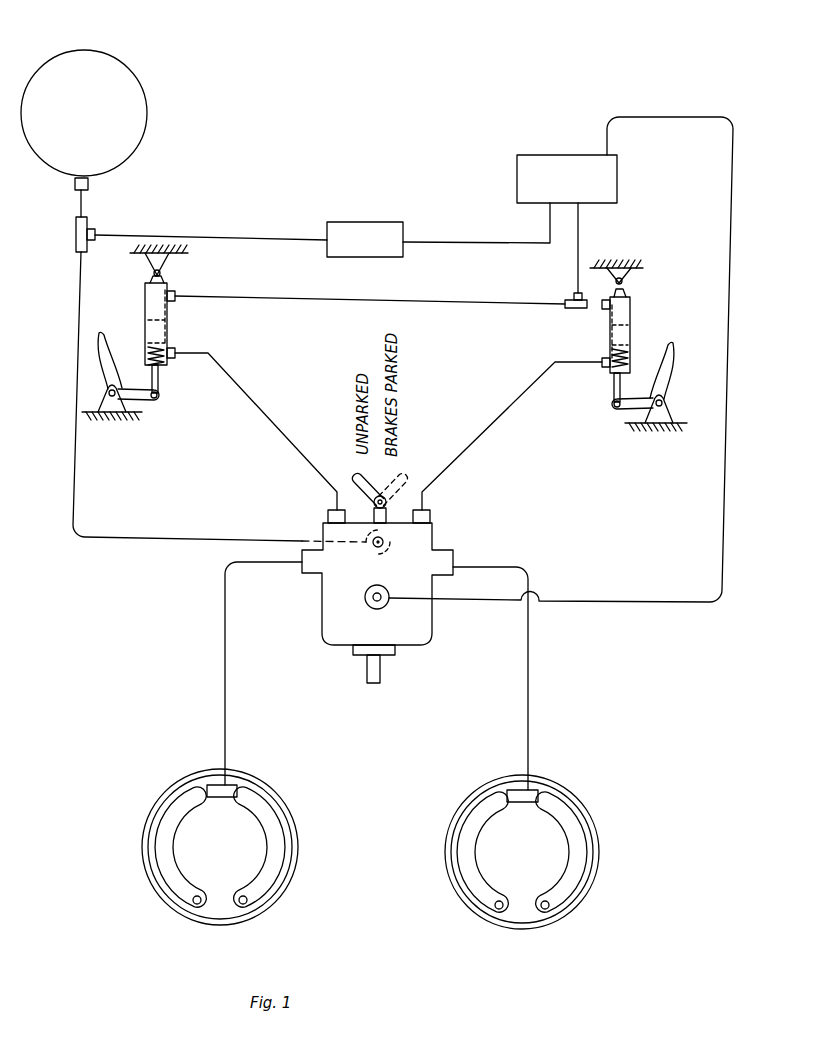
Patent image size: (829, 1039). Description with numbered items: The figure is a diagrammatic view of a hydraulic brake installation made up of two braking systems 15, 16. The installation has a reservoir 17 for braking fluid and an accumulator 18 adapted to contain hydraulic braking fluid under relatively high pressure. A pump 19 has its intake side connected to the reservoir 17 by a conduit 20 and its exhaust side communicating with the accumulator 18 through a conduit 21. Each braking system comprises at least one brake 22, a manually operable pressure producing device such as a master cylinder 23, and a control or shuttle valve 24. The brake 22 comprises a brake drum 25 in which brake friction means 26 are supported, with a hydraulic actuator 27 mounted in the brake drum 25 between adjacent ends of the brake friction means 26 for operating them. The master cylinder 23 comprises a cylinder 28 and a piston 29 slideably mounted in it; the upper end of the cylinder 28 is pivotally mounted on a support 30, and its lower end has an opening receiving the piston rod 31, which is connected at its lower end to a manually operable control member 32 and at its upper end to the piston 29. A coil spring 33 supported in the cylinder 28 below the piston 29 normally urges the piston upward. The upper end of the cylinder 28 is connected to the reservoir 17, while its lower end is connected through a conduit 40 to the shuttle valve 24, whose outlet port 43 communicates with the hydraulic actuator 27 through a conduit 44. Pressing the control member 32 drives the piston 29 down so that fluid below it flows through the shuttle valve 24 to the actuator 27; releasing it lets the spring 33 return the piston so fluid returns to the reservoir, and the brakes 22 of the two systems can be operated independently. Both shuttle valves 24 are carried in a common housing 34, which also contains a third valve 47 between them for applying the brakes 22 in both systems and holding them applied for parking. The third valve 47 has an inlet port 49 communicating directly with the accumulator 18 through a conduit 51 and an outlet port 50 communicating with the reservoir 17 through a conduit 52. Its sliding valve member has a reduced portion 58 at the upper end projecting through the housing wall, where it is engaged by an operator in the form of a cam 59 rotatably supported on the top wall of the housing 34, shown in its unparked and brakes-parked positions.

The braking system 15 is at (243, 399).
The braking system 16 is at (520, 403).
The reservoir 17 is at (552, 152).
The accumulator 18 is at (146, 93).
The pump 19 is at (363, 221).
The conduit 20 is at (447, 241).
The conduit 21 is at (231, 238).
The brake 22 is at (298, 794).
The master cylinder 23 is at (172, 330).
The shuttle valve 24 is at (326, 511).
The brake drum 25 is at (188, 777).
The brake friction means 26 is at (272, 873).
The hydraulic actuator 27 is at (232, 791).
The cylinder 28 is at (146, 313).
The piston 29 is at (170, 343).
The support 30 is at (190, 256).
The piston rod 31 is at (160, 381).
The manually operable control member 32 is at (160, 403).
The coil spring 33 is at (147, 352).
The housing 34 is at (427, 633).
The conduit 40 is at (277, 421).
The outlet port 43 is at (300, 566).
The conduit 44 is at (228, 683).
The third valve 47 is at (388, 672).
The inlet port 49 is at (392, 547).
The outlet port 50 is at (385, 604).
The conduit 51 is at (150, 538).
The conduit 52 is at (595, 600).
The reduced portion 58 is at (386, 518).
The cam 59 is at (386, 501).